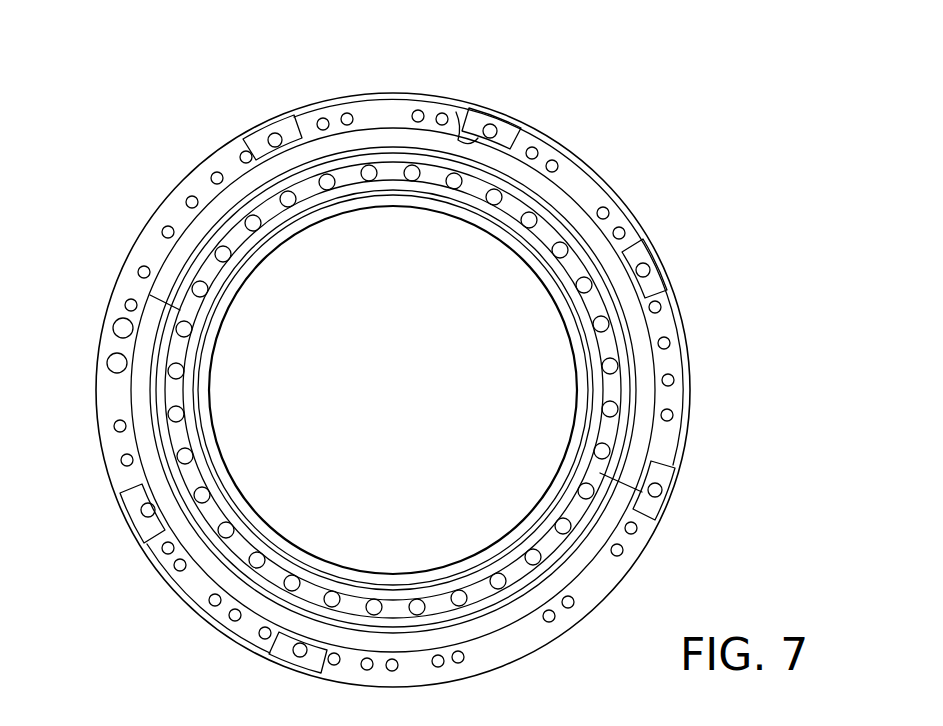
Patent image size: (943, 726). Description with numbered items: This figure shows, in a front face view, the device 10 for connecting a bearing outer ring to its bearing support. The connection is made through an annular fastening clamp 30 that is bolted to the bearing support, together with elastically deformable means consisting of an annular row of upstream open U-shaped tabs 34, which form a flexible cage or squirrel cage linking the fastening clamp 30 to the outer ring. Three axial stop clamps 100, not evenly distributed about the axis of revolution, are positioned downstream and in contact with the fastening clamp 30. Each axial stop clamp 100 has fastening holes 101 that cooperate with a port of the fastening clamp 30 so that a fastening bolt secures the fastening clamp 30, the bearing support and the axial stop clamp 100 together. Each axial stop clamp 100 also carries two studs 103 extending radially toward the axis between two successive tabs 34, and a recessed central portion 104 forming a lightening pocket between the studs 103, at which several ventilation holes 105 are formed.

The device 10 is at (736, 185).
The annular fastening clamp 30 is at (587, 182).
The tabs 34 is at (185, 208).
The axial stop clamp 100 is at (297, 127).
The fastening holes 101 is at (260, 123).
The studs 103 is at (466, 125).
The central portion 104 is at (370, 115).
The ventilation holes 105 is at (333, 98).